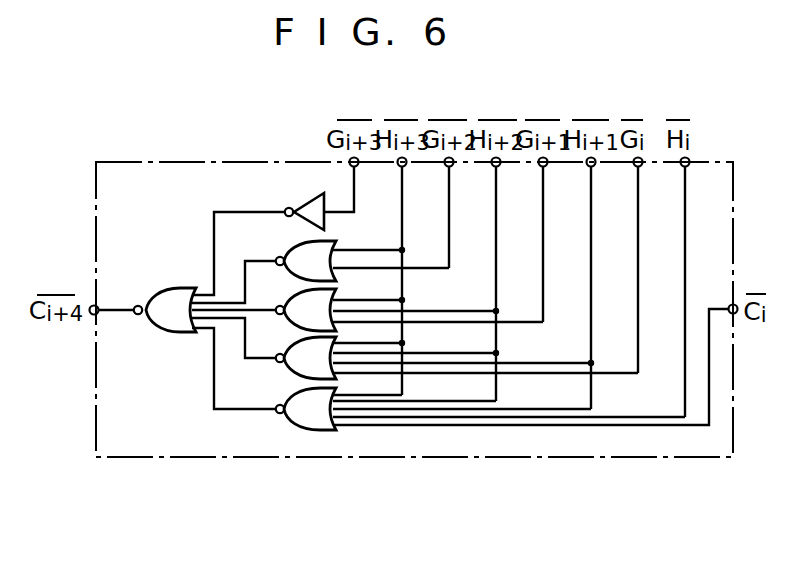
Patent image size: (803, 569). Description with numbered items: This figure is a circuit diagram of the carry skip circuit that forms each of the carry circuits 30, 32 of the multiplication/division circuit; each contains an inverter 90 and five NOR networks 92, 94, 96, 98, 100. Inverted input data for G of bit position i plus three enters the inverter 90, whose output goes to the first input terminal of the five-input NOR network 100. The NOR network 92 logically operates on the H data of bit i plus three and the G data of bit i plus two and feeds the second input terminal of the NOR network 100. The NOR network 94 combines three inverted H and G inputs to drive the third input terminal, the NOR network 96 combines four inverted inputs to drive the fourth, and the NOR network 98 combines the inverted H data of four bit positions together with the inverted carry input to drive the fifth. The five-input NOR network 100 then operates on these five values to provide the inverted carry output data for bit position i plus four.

The carry circuit 30 is at (414, 355).
The carry circuit 32 is at (435, 458).
The inverter 90 is at (318, 203).
The NOR network 92 is at (300, 253).
The NOR network 94 is at (299, 304).
The NOR network 96 is at (299, 354).
The NOR network 98 is at (300, 404).
The 5-input NOR network 100 is at (180, 323).